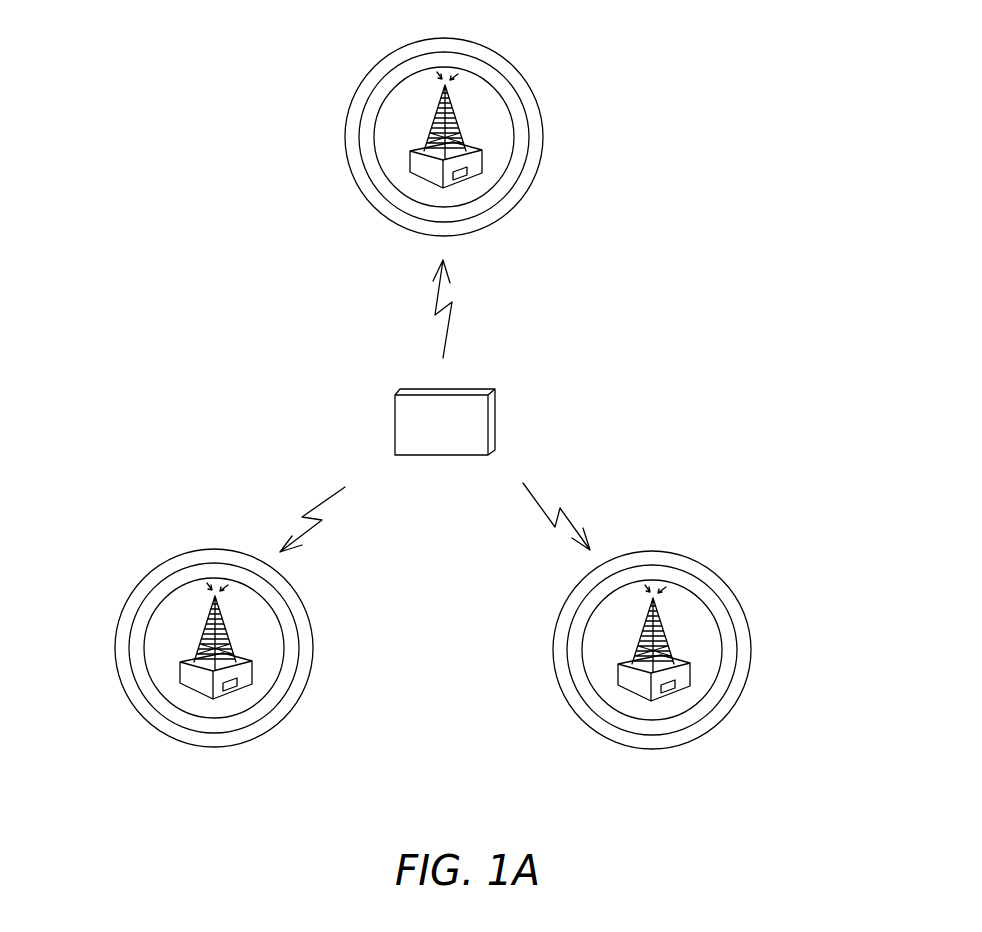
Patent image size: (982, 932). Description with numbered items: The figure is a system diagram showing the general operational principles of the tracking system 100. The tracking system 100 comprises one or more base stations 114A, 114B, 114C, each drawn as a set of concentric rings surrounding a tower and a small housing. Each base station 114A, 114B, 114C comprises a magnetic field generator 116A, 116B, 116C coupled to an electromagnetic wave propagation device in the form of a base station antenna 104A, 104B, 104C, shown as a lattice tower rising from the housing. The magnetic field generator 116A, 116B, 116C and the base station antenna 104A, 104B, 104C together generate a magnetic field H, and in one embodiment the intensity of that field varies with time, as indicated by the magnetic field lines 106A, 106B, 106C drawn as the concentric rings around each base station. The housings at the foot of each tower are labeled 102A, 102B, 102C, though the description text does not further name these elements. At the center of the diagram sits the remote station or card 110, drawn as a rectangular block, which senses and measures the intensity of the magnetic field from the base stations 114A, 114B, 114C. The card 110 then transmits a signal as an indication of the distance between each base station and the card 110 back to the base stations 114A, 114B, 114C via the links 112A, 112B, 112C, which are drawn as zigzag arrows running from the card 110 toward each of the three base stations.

The tracking system 100 is at (720, 237).
The base station 102A is at (490, 157).
The base station 102B is at (260, 668).
The base station 102C is at (698, 670).
The base station antenna 104A is at (438, 94).
The base station antenna 104B is at (208, 606).
The base station antenna 104C is at (643, 641).
The magnetic field lines 106A is at (537, 110).
The magnetic field lines 106B is at (307, 621).
The magnetic field lines 106C is at (745, 623).
The remote station or card 110 is at (492, 412).
The link 112A is at (452, 320).
The link 112B is at (328, 498).
The link 112C is at (570, 517).
The base station 114A is at (398, 130).
The base station 114B is at (177, 628).
The base station 114C is at (617, 641).
The magnetic field generator 116A is at (463, 182).
The magnetic field generator 116B is at (233, 693).
The magnetic field generator 116C is at (671, 695).